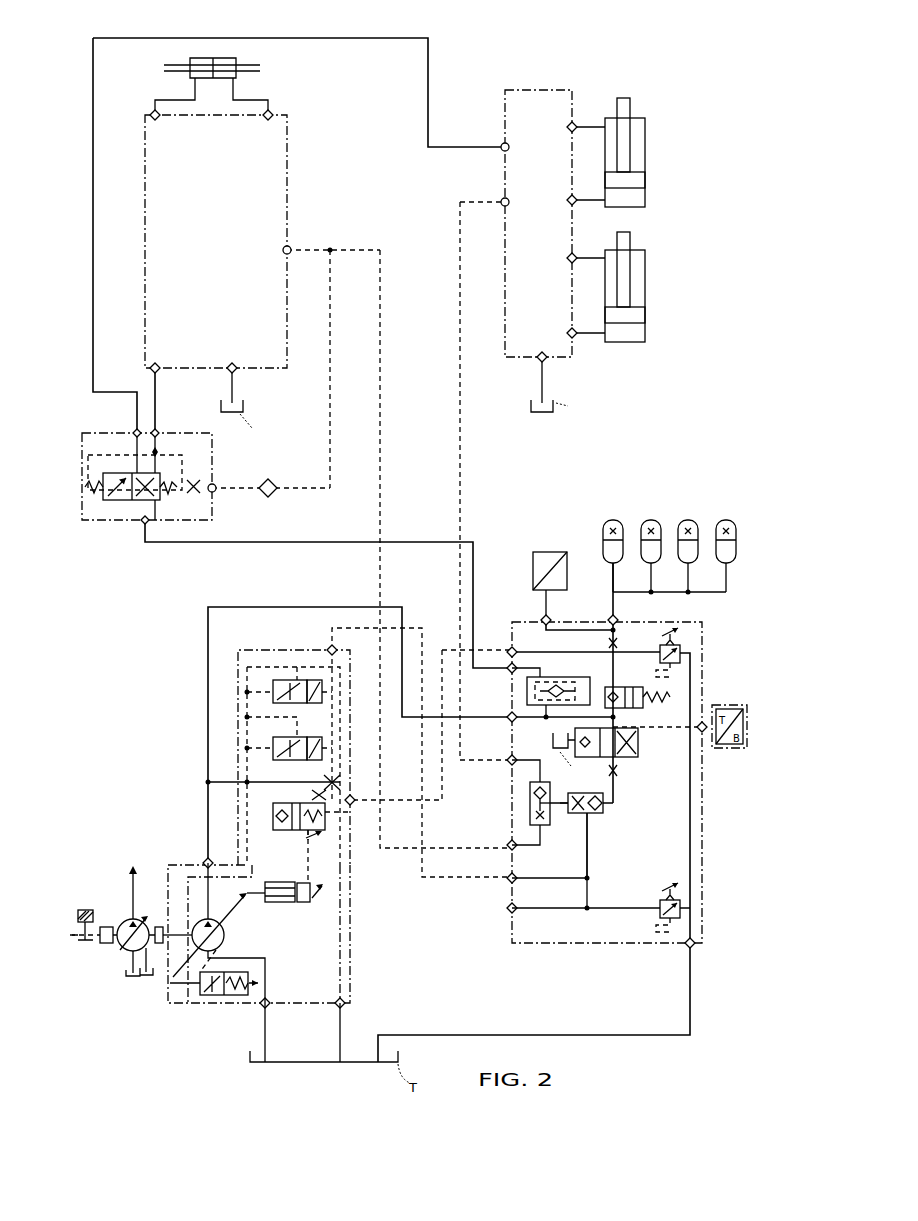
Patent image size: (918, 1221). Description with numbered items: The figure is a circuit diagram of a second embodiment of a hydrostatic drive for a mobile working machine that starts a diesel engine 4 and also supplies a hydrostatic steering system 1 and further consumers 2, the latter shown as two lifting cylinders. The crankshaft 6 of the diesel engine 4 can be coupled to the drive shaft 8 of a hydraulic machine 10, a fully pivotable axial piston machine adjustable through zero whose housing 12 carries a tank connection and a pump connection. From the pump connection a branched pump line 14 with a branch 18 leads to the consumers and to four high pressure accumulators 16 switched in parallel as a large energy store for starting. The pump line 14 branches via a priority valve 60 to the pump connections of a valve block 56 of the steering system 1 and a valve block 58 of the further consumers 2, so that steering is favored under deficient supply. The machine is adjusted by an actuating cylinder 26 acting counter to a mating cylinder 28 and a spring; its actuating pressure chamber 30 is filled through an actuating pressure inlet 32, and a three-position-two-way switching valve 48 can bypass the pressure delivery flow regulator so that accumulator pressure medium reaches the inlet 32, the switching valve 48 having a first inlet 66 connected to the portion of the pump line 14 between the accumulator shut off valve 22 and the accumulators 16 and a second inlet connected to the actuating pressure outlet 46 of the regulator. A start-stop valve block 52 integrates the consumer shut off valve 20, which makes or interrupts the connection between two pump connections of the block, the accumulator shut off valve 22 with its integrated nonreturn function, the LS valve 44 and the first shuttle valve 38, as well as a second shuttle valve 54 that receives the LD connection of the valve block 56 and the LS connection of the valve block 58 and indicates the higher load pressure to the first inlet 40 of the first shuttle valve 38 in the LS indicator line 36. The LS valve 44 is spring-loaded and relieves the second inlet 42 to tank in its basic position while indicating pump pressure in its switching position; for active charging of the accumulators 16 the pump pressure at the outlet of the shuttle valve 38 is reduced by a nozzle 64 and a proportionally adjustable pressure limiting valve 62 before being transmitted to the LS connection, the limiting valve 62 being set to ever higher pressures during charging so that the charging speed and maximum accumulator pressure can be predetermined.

The hydrostatic steering system 1 is at (300, 122).
The further consumers 2 is at (598, 102).
The diesel engine 4 is at (92, 955).
The crankshaft 6 is at (126, 918).
The drive shaft 8 is at (150, 904).
The hydraulic machine 10 is at (207, 960).
The housing 12 is at (356, 940).
The pump line 14 is at (427, 97).
The high pressure accumulator 16 is at (610, 515).
The branch 18 is at (547, 711).
The consumer shut off valve 20 is at (565, 672).
The accumulator shut off valve 22 is at (670, 688).
The actuating cylinder 26 is at (270, 906).
The mating cylinder 28 is at (232, 998).
The actuating pressure chamber 30 is at (305, 906).
The actuating pressure inlet 32 is at (335, 876).
The LS indicator line 36 is at (549, 812).
The first shuttle valve 38 is at (611, 811).
The first inlet 40 is at (565, 818).
The second inlet 42 is at (615, 808).
The LS valve 44 is at (638, 727).
The actuating pressure outlet 46 is at (320, 782).
The 3/2-way valve 48 is at (338, 843).
The start-stop valve block 52 is at (558, 950).
The second shuttle valve 54 is at (528, 797).
The valve block 56 is at (206, 248).
The valve block 58 is at (552, 262).
The priority valve 60 is at (101, 524).
The adjustable pressure limiting valve 62 is at (654, 899).
The nozzle 64 is at (591, 834).
The first inlet of the 3/2-way valve 66 is at (342, 787).